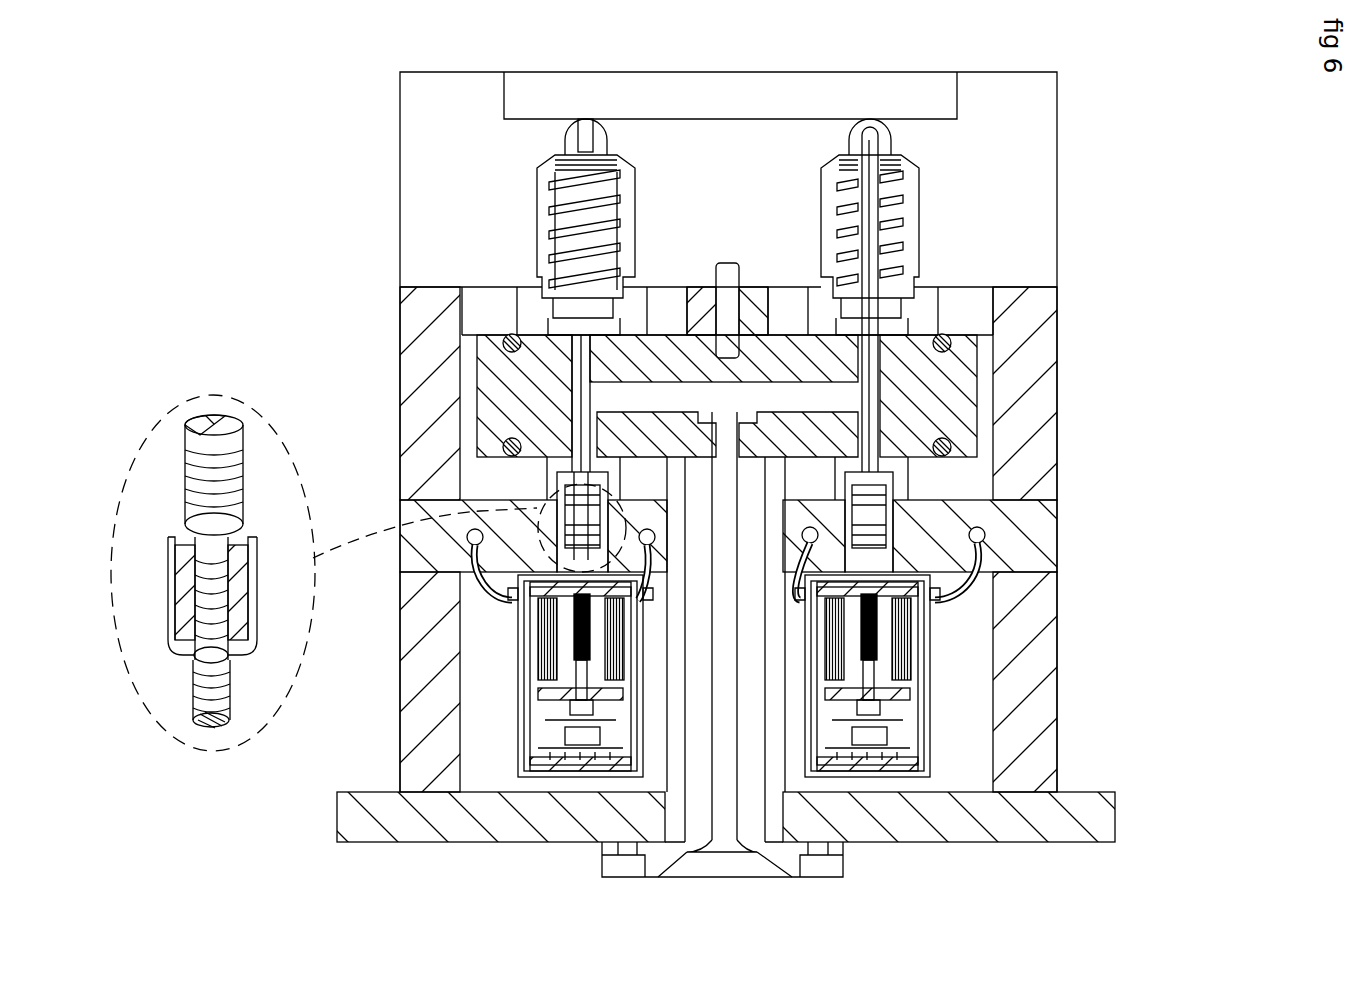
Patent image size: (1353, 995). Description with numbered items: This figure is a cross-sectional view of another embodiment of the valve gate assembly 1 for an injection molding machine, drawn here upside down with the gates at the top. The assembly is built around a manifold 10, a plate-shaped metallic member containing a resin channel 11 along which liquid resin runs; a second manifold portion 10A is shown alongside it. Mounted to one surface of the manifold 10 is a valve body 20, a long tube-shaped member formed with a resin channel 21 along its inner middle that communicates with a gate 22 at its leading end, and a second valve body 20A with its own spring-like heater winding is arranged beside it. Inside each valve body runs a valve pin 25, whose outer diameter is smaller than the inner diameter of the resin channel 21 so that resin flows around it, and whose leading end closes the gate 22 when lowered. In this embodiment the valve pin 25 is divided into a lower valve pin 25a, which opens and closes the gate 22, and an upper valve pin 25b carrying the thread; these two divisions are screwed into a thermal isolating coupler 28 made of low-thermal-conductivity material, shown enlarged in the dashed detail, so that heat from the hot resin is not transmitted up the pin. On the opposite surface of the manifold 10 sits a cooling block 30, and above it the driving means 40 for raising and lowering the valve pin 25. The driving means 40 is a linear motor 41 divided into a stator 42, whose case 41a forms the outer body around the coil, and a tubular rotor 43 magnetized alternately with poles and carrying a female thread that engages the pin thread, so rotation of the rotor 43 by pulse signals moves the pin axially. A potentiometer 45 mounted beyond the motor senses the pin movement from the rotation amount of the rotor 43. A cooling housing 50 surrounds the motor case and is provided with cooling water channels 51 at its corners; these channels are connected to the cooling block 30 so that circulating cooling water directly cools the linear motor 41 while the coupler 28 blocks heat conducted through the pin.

The switching device 1 is at (993, 578).
The manifold 10 is at (932, 395).
The housing block portion 10A is at (947, 450).
The resin channel 11 is at (607, 395).
The valve body 20 is at (848, 142).
The spring unit 20A is at (553, 230).
The resin channel 21 is at (885, 210).
The gate 22 is at (872, 122).
The valve pin 25 is at (875, 236).
The lower valve pin 25a is at (183, 475).
The upper valve pin 25b is at (187, 692).
The thermal isolating coupler 28 is at (177, 597).
The cooling block 30 is at (1020, 535).
The driving means 40 is at (935, 625).
The linear motor 41 is at (920, 637).
The case 41a is at (917, 710).
The stator 42 is at (903, 655).
The rotor 43 is at (565, 647).
The potentiometer 45 is at (570, 745).
The cooling housing 50 is at (517, 617).
The cooling water channel 51 is at (525, 641).